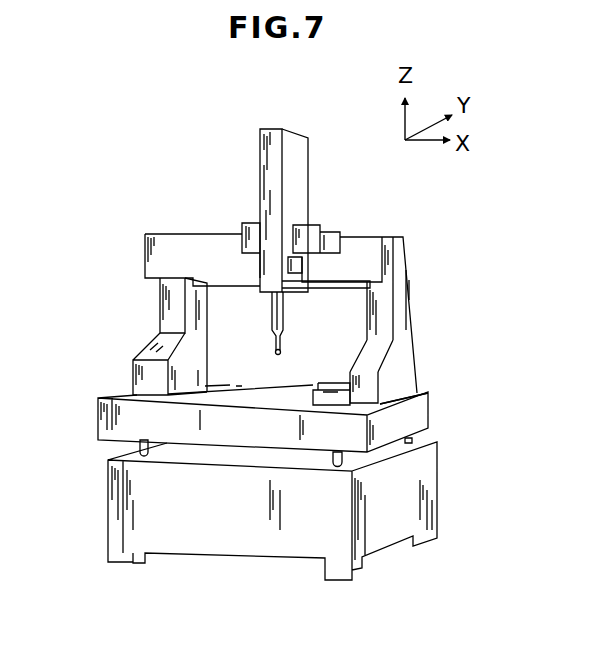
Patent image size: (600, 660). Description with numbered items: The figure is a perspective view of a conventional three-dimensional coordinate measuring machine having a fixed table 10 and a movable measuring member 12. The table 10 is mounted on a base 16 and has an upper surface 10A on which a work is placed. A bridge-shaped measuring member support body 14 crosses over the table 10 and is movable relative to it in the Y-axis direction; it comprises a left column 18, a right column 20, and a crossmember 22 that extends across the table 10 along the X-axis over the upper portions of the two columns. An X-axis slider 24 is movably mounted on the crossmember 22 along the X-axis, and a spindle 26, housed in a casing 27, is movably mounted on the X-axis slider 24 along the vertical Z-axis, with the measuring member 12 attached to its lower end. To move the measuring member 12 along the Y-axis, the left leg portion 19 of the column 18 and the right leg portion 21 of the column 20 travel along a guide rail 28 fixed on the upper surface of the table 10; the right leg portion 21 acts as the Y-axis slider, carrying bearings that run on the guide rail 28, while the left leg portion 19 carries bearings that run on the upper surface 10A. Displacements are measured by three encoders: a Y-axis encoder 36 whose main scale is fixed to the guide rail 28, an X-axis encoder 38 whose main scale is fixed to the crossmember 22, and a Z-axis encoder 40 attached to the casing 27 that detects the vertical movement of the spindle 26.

The table 10 is at (108, 430).
The upper surface 10A is at (242, 397).
The measuring member 12 is at (281, 354).
The measuring member support body 14 is at (138, 345).
The base 16 is at (218, 545).
The left column 18 is at (168, 312).
The left leg portion 19 is at (140, 380).
The right column 20 is at (407, 327).
The right leg portion 21 is at (405, 392).
The crossmember 22 is at (195, 242).
The X-axis slider 24 is at (312, 233).
The spindle 26 is at (272, 313).
The casing 27 is at (288, 128).
The guide rail 28 is at (340, 405).
The Y-axis encoder 36 is at (382, 390).
The X-axis encoder 38 is at (328, 289).
The Z-axis encoder 40 is at (302, 263).